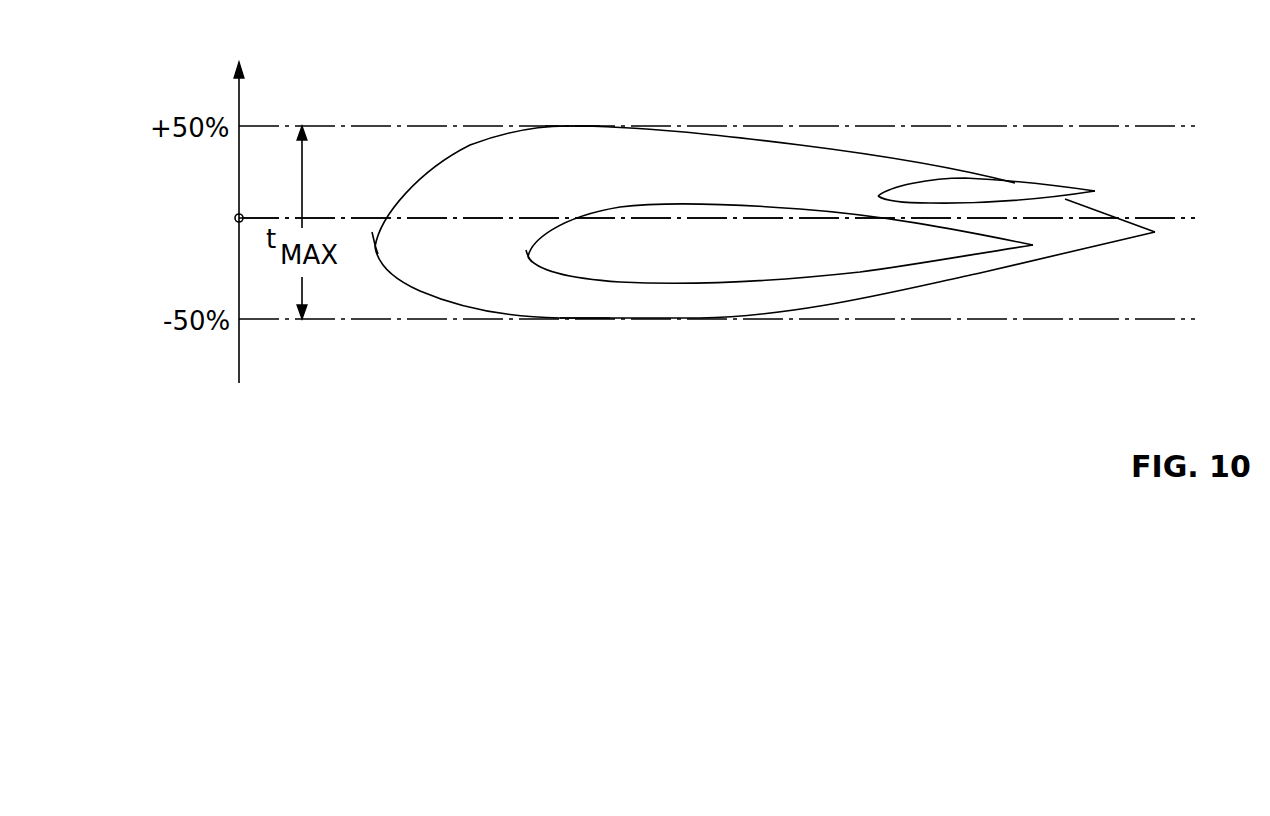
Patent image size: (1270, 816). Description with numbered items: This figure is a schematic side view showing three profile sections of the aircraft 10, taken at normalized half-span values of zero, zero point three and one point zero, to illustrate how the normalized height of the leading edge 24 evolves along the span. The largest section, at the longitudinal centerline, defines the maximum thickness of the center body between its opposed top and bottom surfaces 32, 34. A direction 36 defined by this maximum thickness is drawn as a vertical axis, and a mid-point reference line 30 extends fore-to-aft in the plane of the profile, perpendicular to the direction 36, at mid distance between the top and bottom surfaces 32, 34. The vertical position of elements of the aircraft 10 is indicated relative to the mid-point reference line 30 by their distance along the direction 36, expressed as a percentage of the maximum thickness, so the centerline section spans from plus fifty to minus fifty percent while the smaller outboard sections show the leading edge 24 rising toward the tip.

The aircraft 10 is at (677, 153).
The leading edge 24 is at (377, 250).
The mid-point reference line 30 is at (331, 217).
The top surface 32 is at (582, 126).
The bottom surface 34 is at (582, 318).
The direction defined by the maximum thickness 36 is at (240, 93).